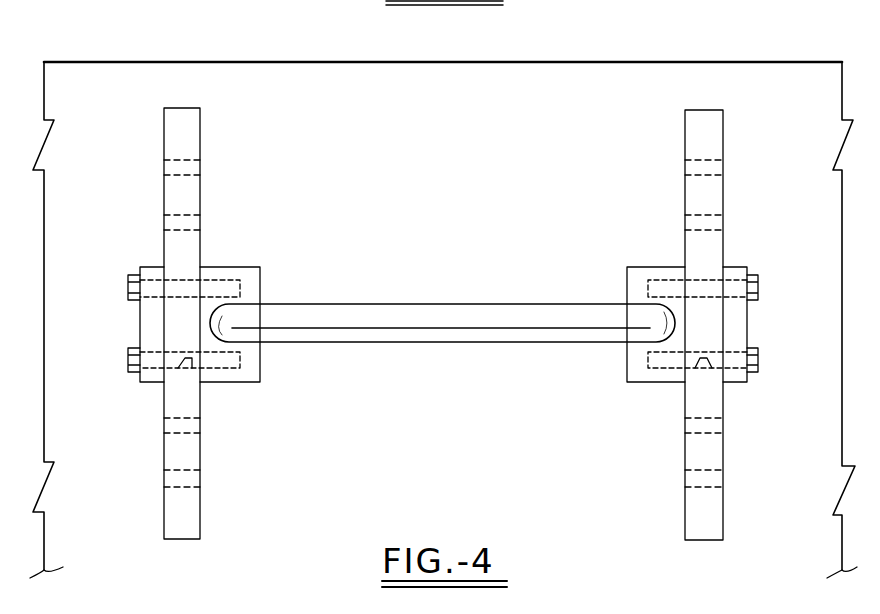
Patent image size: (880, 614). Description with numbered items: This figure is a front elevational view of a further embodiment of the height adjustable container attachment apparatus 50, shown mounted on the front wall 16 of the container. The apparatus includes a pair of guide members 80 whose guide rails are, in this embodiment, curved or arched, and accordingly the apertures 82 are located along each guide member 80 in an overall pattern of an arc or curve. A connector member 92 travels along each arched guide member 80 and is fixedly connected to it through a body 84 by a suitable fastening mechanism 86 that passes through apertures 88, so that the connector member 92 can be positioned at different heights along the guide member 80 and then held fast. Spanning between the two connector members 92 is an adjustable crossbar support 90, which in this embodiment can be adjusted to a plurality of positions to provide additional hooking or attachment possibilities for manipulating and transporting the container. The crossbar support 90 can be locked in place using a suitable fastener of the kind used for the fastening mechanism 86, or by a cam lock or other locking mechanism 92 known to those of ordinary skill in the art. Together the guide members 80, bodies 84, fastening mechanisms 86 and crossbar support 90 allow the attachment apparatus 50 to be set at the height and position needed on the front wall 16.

The front wall 16 is at (645, 62).
The height adjustable container attachment apparatus 50 is at (182, 92).
The guide member 80 is at (443, 324).
The apertures 82 is at (174, 175).
The body 84 is at (155, 268).
The fastening mechanism 86 is at (133, 358).
The apertures 88 is at (185, 365).
The adjustable crossbar support 90 is at (487, 306).
The connector member 92 is at (250, 264).